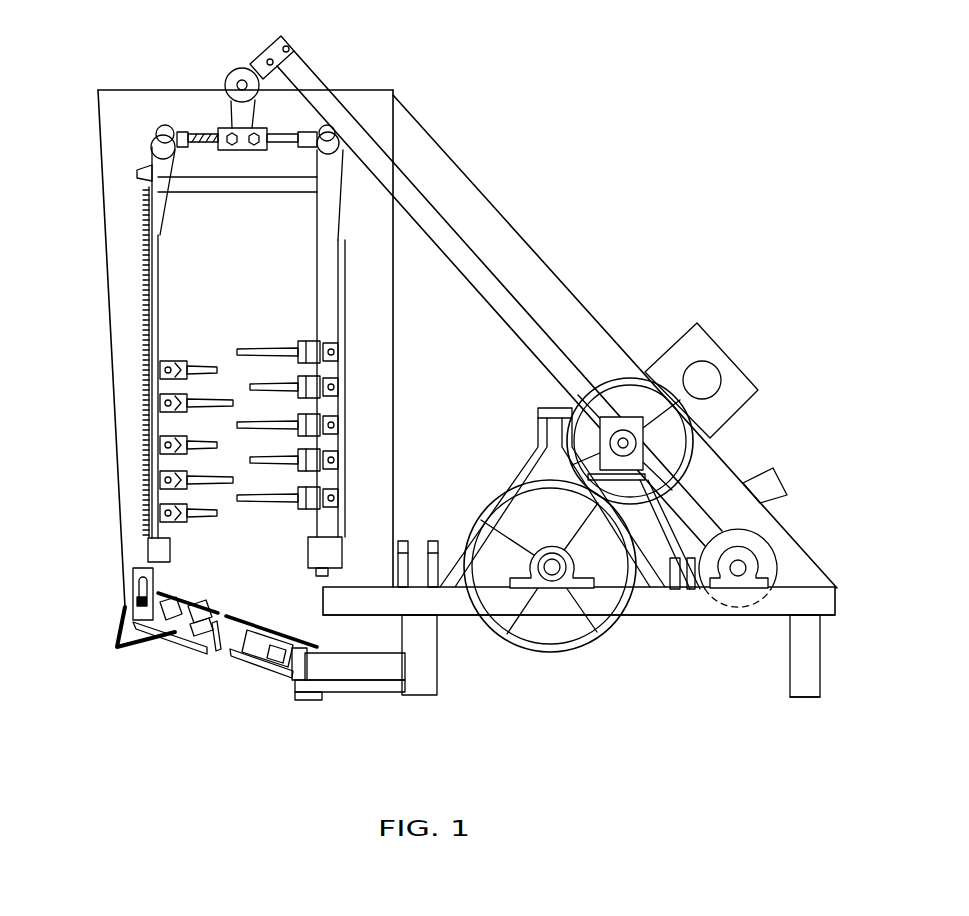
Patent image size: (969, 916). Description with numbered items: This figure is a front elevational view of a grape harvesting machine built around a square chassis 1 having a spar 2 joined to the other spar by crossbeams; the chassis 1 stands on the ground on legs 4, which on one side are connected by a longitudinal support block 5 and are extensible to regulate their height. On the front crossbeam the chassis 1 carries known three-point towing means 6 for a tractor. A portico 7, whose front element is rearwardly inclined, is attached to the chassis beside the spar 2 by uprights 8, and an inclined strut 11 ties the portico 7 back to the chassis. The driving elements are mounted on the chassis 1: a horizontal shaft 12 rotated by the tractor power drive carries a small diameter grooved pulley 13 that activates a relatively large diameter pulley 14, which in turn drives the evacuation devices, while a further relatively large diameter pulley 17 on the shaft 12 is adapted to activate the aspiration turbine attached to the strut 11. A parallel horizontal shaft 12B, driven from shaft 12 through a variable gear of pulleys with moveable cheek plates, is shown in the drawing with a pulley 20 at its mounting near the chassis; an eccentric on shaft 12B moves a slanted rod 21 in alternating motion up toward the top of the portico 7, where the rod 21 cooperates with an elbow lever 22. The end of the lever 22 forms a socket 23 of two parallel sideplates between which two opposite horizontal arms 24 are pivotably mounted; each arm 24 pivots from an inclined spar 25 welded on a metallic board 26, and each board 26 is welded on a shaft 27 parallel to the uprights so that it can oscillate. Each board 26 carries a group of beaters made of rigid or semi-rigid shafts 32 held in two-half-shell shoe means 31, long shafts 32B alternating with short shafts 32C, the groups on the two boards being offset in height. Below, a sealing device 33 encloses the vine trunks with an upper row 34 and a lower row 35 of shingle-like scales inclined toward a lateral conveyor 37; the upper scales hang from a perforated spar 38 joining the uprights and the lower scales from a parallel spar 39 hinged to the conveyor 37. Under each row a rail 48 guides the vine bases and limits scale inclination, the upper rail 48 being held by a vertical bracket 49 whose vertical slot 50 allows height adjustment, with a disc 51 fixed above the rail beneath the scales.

The chassis 1 is at (670, 612).
The spar 2 is at (333, 603).
The legs 4 is at (430, 668).
The longitudinal support block 5 is at (810, 690).
The towing means 6 is at (538, 411).
The portico 7 is at (130, 100).
The upright 8 is at (393, 338).
The inclined strut 11 is at (520, 253).
The horizontal shaft 12 is at (552, 580).
The horizontal shaft 12B is at (740, 576).
The small diameter grooved pulley 13 is at (533, 575).
The relatively large diameter pulley 14 is at (618, 380).
The relatively large diameter pulley 17 is at (593, 653).
The pulley 20 is at (760, 545).
The rod 21 is at (422, 210).
The elbow lever 22 is at (243, 68).
The socket 23 is at (240, 150).
The horizontal arms 24 is at (198, 132).
The inclined spar 25 is at (160, 182).
The metallic board 26 is at (160, 293).
The shaft 27 is at (310, 575).
The shoe means 31 is at (170, 403).
The shafts 32 is at (193, 365).
The long shafts 32B is at (267, 350).
The short shafts 32C is at (263, 390).
The sealing device 33 is at (237, 618).
The upper row of scales 34 is at (203, 617).
The lower row of scales 35 is at (270, 630).
The lateral parallel conveyor 37 is at (347, 667).
The spar 38 is at (170, 620).
The spar 39 is at (303, 700).
The rail 48 is at (260, 667).
The vertical bracket 49 is at (137, 573).
The vertical slot 50 is at (140, 597).
The disc 51 is at (220, 651).